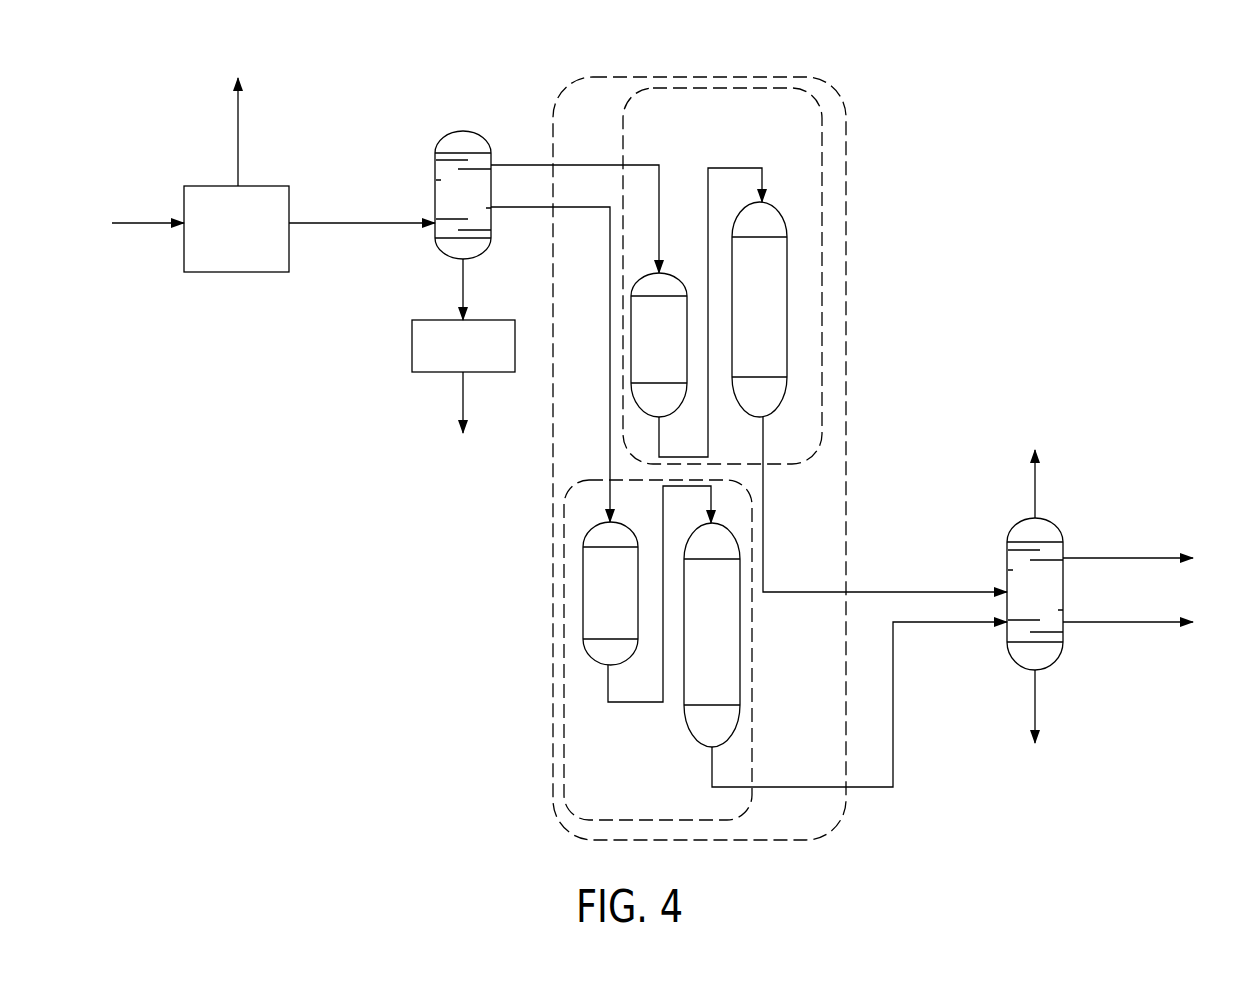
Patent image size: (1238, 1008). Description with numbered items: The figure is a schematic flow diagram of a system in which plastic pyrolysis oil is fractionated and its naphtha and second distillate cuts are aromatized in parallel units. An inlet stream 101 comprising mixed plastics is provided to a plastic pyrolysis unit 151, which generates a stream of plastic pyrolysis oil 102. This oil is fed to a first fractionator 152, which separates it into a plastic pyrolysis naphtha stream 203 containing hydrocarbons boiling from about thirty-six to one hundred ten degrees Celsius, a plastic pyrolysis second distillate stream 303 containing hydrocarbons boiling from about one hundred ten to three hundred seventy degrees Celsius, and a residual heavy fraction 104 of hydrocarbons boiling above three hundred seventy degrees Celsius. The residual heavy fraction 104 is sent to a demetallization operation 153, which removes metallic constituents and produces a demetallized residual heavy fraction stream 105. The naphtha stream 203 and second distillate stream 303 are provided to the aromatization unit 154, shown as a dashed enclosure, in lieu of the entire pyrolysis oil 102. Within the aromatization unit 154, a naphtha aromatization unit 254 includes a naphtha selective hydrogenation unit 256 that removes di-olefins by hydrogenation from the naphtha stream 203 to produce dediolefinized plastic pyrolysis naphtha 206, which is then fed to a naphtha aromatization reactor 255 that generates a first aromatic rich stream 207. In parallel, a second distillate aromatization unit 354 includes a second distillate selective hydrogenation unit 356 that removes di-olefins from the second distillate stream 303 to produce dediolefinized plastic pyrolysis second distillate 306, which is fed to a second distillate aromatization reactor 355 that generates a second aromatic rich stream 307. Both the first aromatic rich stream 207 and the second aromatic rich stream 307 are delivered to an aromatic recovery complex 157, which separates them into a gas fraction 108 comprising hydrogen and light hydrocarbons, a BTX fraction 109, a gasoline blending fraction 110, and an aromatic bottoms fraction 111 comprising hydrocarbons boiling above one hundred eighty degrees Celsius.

The inlet stream 101 is at (140, 221).
The stream of plastic pyrolysis oil 102 is at (330, 222).
The residual heavy fraction 104 is at (462, 291).
The demetallized residual heavy fraction stream 105 is at (462, 402).
The gas fraction 108 is at (1035, 478).
The BTX fraction 109 is at (1110, 558).
The gasoline blending fraction 110 is at (1127, 622).
The aromatic bottoms fraction 111 is at (240, 148).
The plastic pyrolysis unit 151 is at (183, 262).
The first fractionator 152 is at (440, 186).
The demetallization operation 153 is at (410, 340).
The aromatization unit 154 is at (757, 75).
The aromatic recovery complex 157 is at (1057, 573).
The plastic pyrolysis naphtha stream 203 is at (505, 165).
The dediolefinized plastic pyrolysis naphtha 206 is at (717, 168).
The first aromatic rich stream 207 is at (900, 592).
The naphtha aromatization unit 254 is at (783, 468).
The naphtha aromatization reactor 255 is at (780, 295).
The naphtha selective hydrogenation unit 256 is at (637, 322).
The plastic pyrolysis second distillate stream 303 is at (505, 208).
The dediolefinized plastic pyrolysis second distillate 306 is at (645, 702).
The second aromatic rich stream 307 is at (968, 628).
The second distillate aromatization unit 354 is at (755, 645).
The second distillate aromatization reactor 355 is at (735, 685).
The second distillate selective hydrogenation unit 356 is at (585, 604).